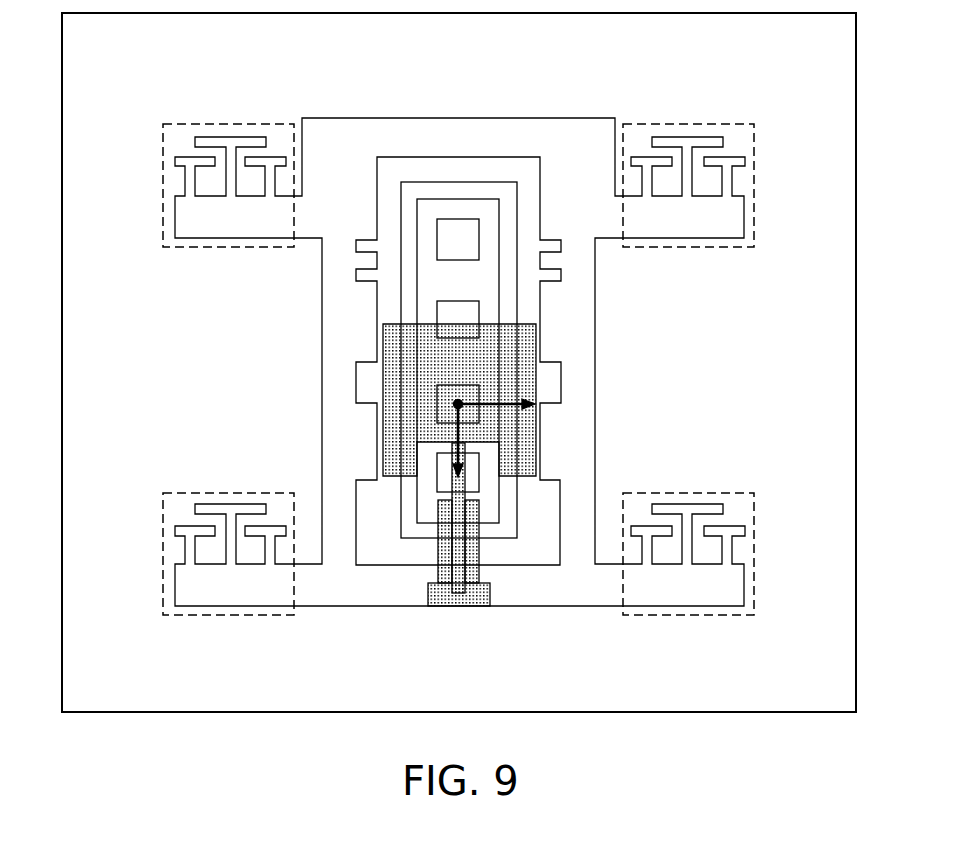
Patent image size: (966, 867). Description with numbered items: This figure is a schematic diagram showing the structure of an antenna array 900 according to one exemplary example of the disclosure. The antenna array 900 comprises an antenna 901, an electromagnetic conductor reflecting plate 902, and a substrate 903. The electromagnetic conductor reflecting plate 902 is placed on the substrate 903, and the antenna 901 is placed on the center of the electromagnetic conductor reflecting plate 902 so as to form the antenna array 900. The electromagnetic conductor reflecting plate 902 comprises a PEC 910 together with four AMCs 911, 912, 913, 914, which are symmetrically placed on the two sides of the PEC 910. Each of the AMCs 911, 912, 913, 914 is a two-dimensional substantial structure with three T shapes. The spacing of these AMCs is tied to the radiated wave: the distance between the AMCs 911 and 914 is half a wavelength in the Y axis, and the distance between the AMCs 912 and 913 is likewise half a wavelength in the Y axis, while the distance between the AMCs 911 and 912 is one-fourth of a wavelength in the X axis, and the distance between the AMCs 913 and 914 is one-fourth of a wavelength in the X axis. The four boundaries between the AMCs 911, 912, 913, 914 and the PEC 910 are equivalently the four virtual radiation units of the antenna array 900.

The antenna array 900 is at (501, 383).
The antenna 901 is at (383, 449).
The electromagnetic conductor reflecting plate 902 is at (488, 118).
The substrate 903 is at (856, 127).
The PEC 910 is at (575, 384).
The AMC 911 is at (238, 124).
The AMC 912 is at (238, 492).
The AMC 913 is at (680, 492).
The AMC 914 is at (680, 124).